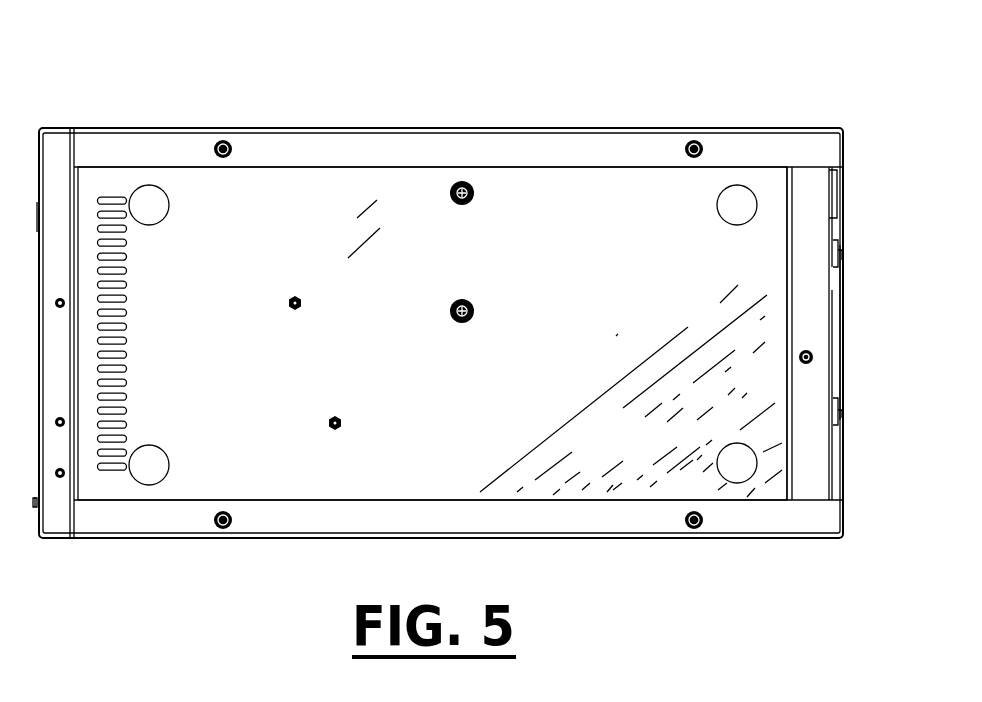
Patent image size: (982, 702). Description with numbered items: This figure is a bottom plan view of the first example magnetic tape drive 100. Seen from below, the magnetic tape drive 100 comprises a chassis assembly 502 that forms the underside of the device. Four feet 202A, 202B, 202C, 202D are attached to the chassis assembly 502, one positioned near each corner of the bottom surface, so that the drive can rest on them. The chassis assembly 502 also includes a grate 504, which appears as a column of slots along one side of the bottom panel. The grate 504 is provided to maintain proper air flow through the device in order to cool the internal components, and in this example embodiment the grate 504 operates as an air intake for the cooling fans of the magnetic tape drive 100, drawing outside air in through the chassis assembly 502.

The magnetic tape drive 100 is at (613, 88).
The chassis assembly 502 is at (597, 212).
The grate 504 is at (145, 328).
The foot 202A is at (152, 446).
The foot 202B is at (152, 223).
The foot 202C is at (718, 206).
The foot 202D is at (728, 448).